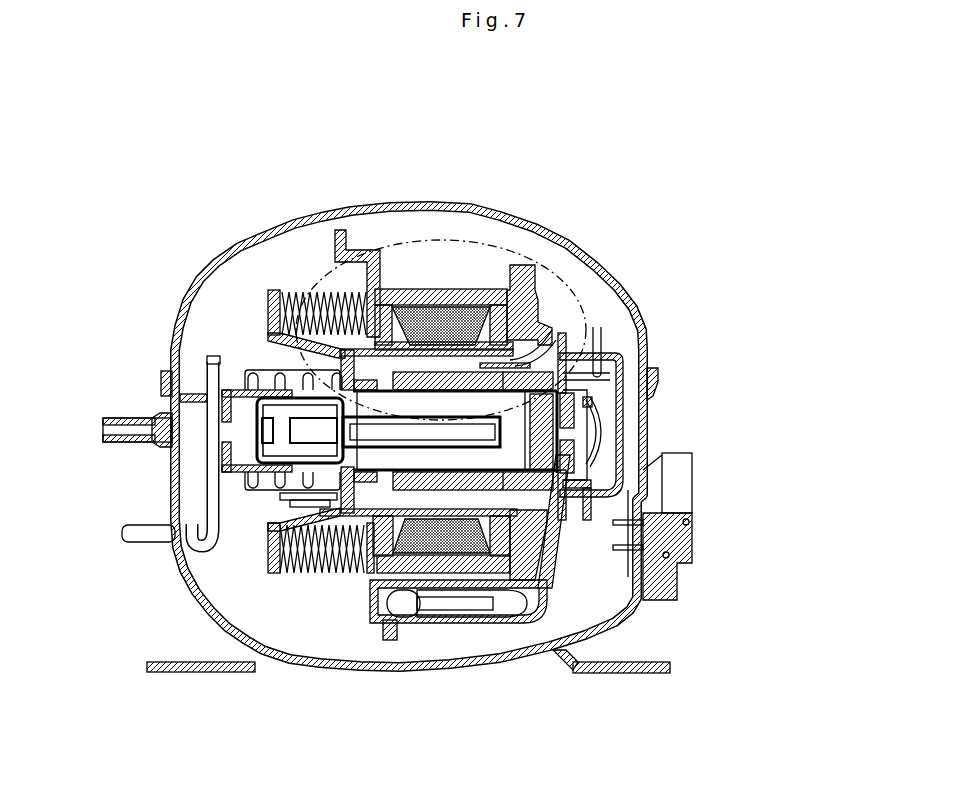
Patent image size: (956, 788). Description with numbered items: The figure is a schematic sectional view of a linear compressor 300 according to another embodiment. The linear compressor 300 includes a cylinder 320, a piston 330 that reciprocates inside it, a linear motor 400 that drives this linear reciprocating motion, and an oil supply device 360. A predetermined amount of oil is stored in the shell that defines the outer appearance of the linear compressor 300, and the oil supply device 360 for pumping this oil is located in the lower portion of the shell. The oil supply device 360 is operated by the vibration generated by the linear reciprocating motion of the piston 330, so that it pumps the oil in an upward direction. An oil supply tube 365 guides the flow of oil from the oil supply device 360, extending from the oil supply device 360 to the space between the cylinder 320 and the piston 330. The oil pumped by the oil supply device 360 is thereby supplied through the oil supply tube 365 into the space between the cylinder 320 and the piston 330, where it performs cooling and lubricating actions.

The linear compressor 300 is at (491, 185).
The linear motor 400 is at (418, 268).
The cylinder 320 is at (556, 384).
The piston 330 is at (592, 406).
The oil supply device 360 is at (498, 636).
The oil supply tube 365 is at (541, 546).